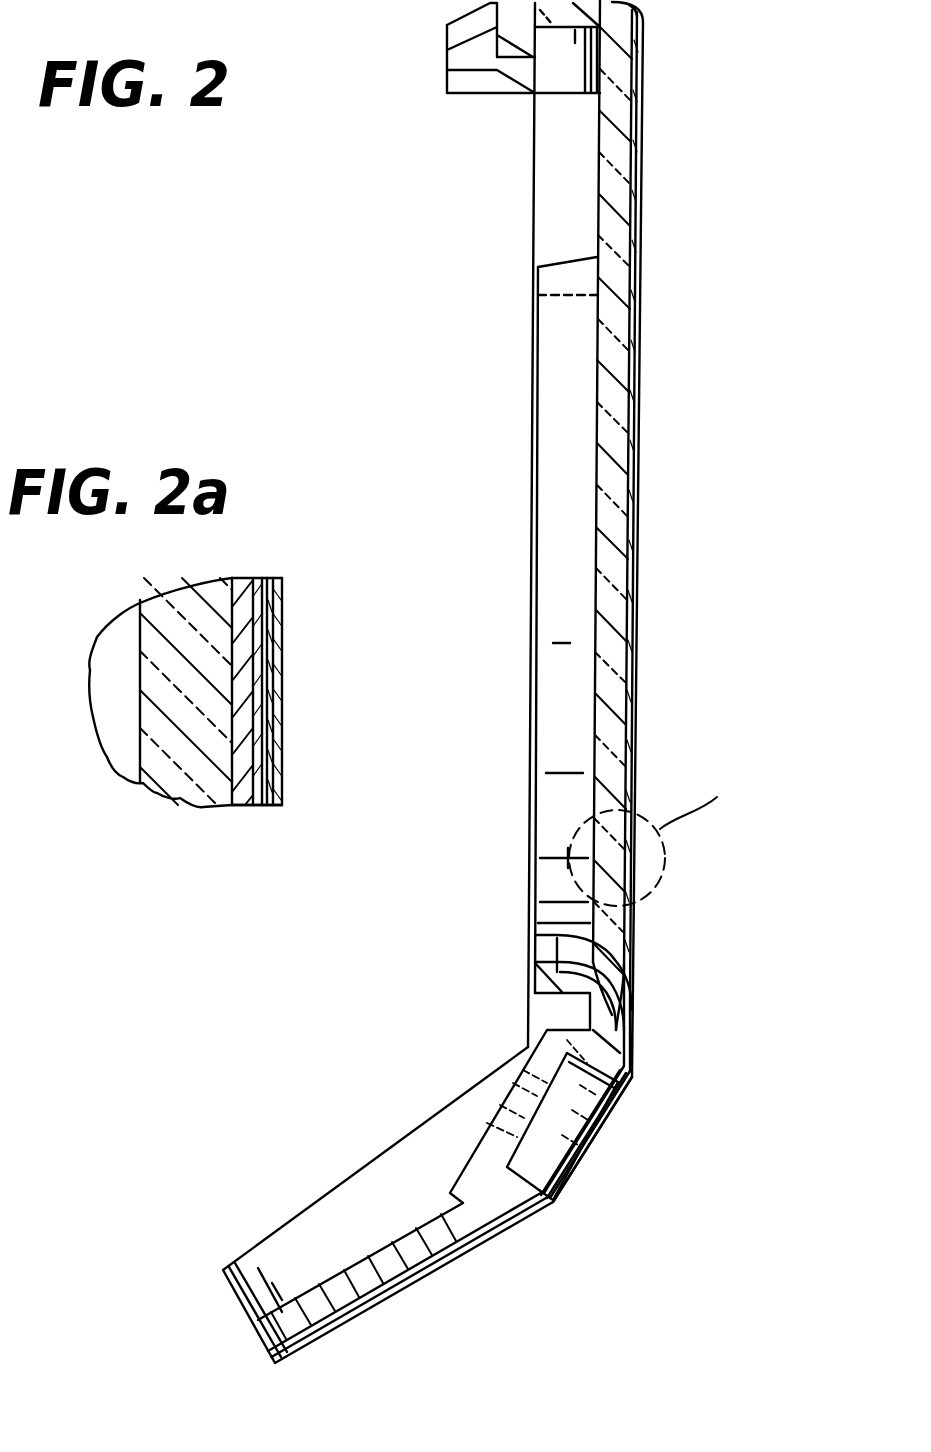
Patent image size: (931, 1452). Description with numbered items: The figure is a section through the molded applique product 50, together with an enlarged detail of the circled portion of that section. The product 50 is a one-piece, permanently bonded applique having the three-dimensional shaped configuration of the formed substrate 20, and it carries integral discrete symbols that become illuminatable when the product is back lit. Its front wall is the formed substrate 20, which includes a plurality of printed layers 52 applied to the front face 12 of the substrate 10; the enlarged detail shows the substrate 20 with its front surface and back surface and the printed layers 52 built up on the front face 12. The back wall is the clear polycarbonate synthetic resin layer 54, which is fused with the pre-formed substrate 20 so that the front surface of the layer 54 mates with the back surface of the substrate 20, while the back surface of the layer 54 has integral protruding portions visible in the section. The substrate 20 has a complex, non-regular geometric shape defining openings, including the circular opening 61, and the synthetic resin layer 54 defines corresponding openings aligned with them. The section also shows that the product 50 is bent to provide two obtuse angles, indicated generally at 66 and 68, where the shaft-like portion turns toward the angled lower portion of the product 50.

In FIG. 2, the molded applique product 50 is at (672, 258).
In FIG. 2, the synthetic resin layer 54 is at (600, 360).
In FIG. 2a, the synthetic resin layer 54 is at (182, 783).
In FIG. 2, the substrate 10 is at (625, 482).
In FIG. 2a, the substrate 10 is at (243, 578).
In FIG. 2, the printed layers 52 is at (638, 395).
In FIG. 2a, the printed layers 52 is at (283, 640).
In FIG. 2a, the front face 12 is at (256, 690).
In FIG. 2a, the formed substrate 20 is at (258, 814).
In FIG. 2, the circular opening 61 is at (633, 980).
In FIG. 2, the obtuse angle 66 is at (647, 1079).
In FIG. 2, the obtuse angle 68 is at (564, 1212).